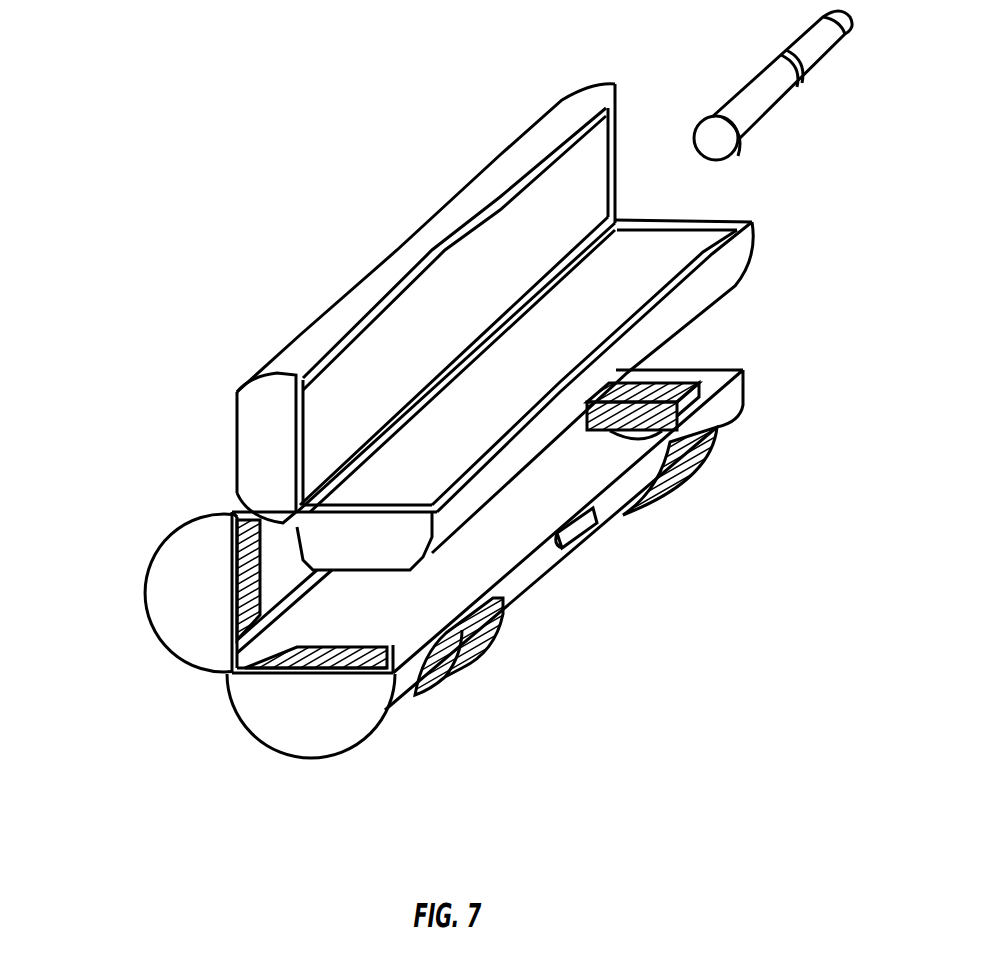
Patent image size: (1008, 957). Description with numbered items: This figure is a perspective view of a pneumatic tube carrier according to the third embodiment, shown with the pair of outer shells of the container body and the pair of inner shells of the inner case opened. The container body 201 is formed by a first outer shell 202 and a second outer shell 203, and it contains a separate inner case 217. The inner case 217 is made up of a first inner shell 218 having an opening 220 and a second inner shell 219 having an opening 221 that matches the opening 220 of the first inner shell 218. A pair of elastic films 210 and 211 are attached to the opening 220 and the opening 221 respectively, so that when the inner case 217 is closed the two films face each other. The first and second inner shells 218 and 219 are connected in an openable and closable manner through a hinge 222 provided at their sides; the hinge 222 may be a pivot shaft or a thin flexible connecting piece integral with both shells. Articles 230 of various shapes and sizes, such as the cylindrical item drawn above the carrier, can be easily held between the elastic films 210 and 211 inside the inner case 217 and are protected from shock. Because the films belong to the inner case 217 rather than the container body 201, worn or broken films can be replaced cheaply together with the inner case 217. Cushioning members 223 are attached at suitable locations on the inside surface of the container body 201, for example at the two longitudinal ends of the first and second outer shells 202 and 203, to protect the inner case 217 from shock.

The container body 201 is at (172, 521).
The first outer shell 202 is at (357, 752).
The second outer shell 203 is at (146, 585).
The elastic film 210 is at (713, 217).
The elastic film 211 is at (618, 92).
The inner case 217 is at (408, 225).
The first inner shell 218 is at (733, 257).
The second inner shell 219 is at (513, 140).
The opening 220 is at (683, 290).
The opening 221 is at (363, 322).
The hinge 222 is at (287, 520).
The cushioning member 223 is at (235, 617).
The article 230 is at (753, 107).